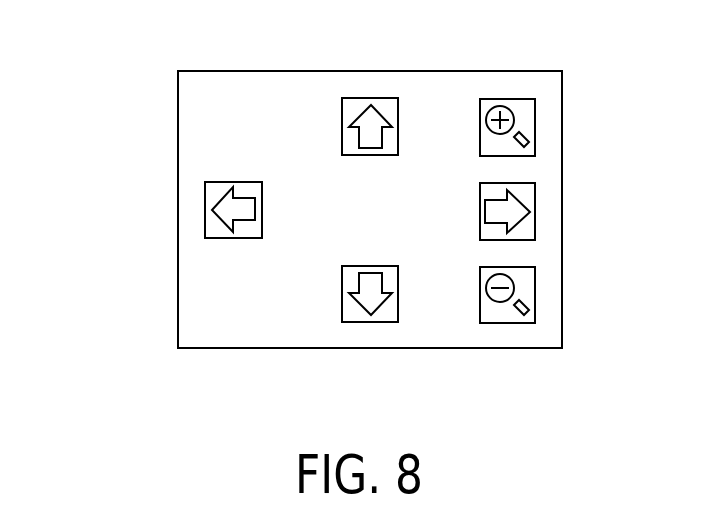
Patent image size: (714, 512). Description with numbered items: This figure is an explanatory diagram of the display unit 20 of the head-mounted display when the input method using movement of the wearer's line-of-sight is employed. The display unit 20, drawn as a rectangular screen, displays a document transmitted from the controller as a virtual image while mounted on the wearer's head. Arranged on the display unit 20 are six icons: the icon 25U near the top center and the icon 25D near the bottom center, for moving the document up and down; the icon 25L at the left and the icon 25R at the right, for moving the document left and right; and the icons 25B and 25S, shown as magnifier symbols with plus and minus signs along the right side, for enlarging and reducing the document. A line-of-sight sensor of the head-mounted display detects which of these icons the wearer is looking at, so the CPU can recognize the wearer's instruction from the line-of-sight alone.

The display unit 20 is at (530, 71).
The icon for moving the document up 25U is at (360, 98).
The icon for moving the document down 25D is at (370, 322).
The icon for moving the document left 25L is at (222, 182).
The icon for moving the document right 25R is at (537, 198).
The icon for enlarging the document 25B is at (537, 119).
The icon for reducing the document 25S is at (537, 287).